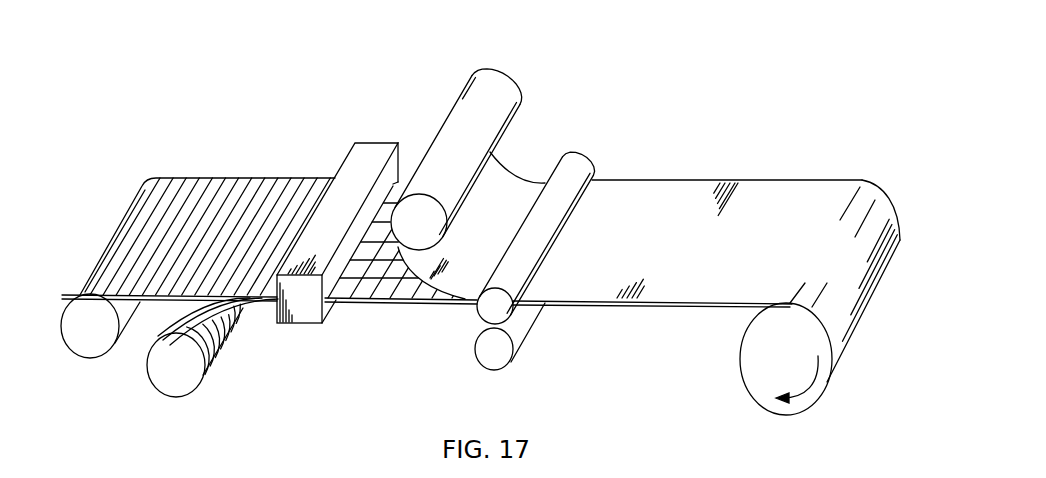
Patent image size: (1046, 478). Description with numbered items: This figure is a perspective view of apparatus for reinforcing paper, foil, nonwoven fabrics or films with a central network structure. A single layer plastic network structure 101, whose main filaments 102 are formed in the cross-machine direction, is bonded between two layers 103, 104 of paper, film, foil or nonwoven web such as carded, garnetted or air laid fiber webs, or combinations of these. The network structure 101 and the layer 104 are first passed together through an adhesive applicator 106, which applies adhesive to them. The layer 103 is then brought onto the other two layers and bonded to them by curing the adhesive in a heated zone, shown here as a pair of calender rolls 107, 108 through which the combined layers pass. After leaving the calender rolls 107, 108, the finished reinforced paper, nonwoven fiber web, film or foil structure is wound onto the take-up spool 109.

The single layer plastic network structure 101 is at (189, 175).
The main filaments 102 is at (262, 190).
The layer 103 is at (505, 172).
The layer 104 is at (215, 328).
The adhesive applicator 106 is at (370, 148).
The calender roll 107 is at (582, 162).
The calender roll 108 is at (490, 358).
The take-up spool 109 is at (752, 365).